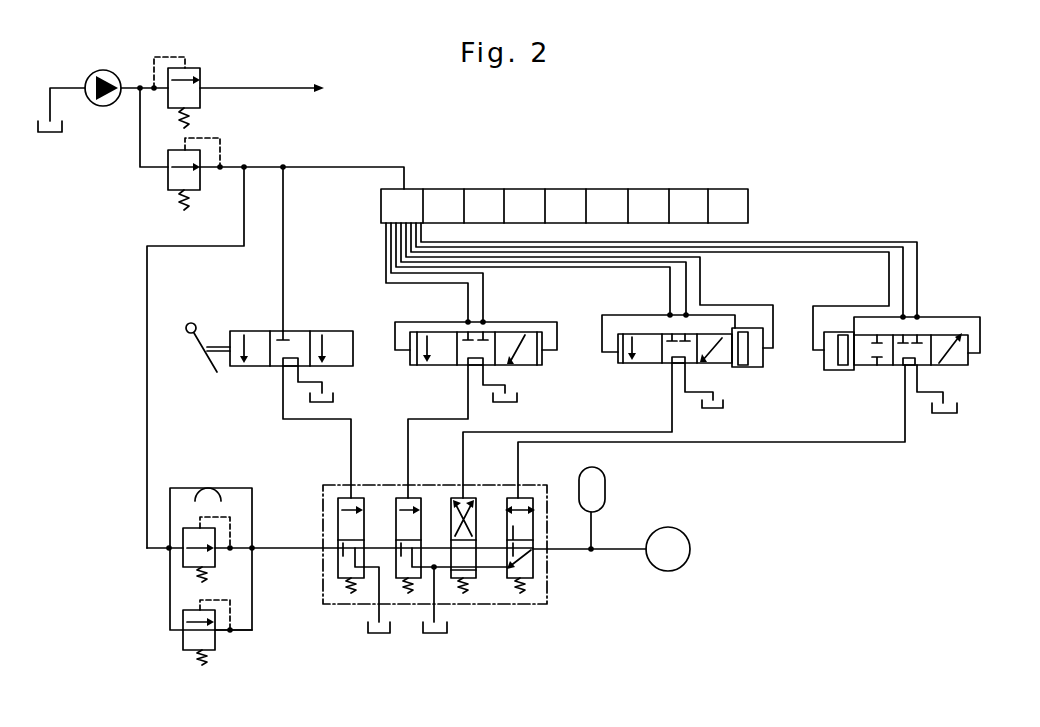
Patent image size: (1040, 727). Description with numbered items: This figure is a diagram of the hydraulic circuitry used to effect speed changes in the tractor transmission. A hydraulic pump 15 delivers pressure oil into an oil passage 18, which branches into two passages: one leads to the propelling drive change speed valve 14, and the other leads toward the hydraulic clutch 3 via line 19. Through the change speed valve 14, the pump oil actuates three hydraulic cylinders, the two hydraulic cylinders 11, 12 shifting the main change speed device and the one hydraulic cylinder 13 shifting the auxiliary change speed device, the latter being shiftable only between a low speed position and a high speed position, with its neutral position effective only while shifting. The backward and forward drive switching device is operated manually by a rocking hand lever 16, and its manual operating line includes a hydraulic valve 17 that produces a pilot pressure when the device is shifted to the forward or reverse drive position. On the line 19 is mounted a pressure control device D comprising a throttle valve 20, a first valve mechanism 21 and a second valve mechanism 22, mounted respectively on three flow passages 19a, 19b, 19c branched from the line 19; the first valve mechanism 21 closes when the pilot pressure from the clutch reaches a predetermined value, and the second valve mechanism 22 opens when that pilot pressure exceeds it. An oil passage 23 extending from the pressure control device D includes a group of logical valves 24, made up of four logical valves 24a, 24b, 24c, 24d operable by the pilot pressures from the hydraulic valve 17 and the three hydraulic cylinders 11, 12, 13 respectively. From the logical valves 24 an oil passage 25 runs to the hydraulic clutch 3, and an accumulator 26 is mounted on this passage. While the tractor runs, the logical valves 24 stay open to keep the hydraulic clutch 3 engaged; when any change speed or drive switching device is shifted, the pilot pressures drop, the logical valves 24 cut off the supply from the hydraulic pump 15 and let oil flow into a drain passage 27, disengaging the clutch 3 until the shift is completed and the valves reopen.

The hydraulic pump 15 is at (103, 70).
The oil passage 18 is at (325, 167).
The propelling drive change speed valve 14 is at (727, 188).
The line 19 is at (147, 382).
The hydraulic valve 17 is at (262, 331).
The rocking hand lever 16 is at (186, 324).
The hydraulic cylinder 13 is at (412, 367).
The hydraulic cylinder 12 is at (615, 356).
The hydraulic cylinder 11 is at (985, 366).
The pressure control device D is at (160, 605).
The flow passage 19a is at (238, 487).
The throttle valve 20 is at (211, 484).
The first valve mechanism 21 is at (182, 558).
The second valve mechanism 22 is at (181, 645).
The flow passage 19b is at (233, 547).
The flow passage 19c is at (247, 632).
The oil passage 23 is at (290, 553).
The group of logical valves 24 is at (485, 605).
The logical valve 24a is at (350, 497).
The logical valve 24b is at (536, 569).
The logical valve 24c is at (470, 496).
The logical valve 24d is at (408, 497).
The drain passage 27 is at (429, 612).
The oil passage 25 is at (627, 552).
The accumulator 26 is at (605, 490).
The hydraulic clutch 3 is at (677, 568).